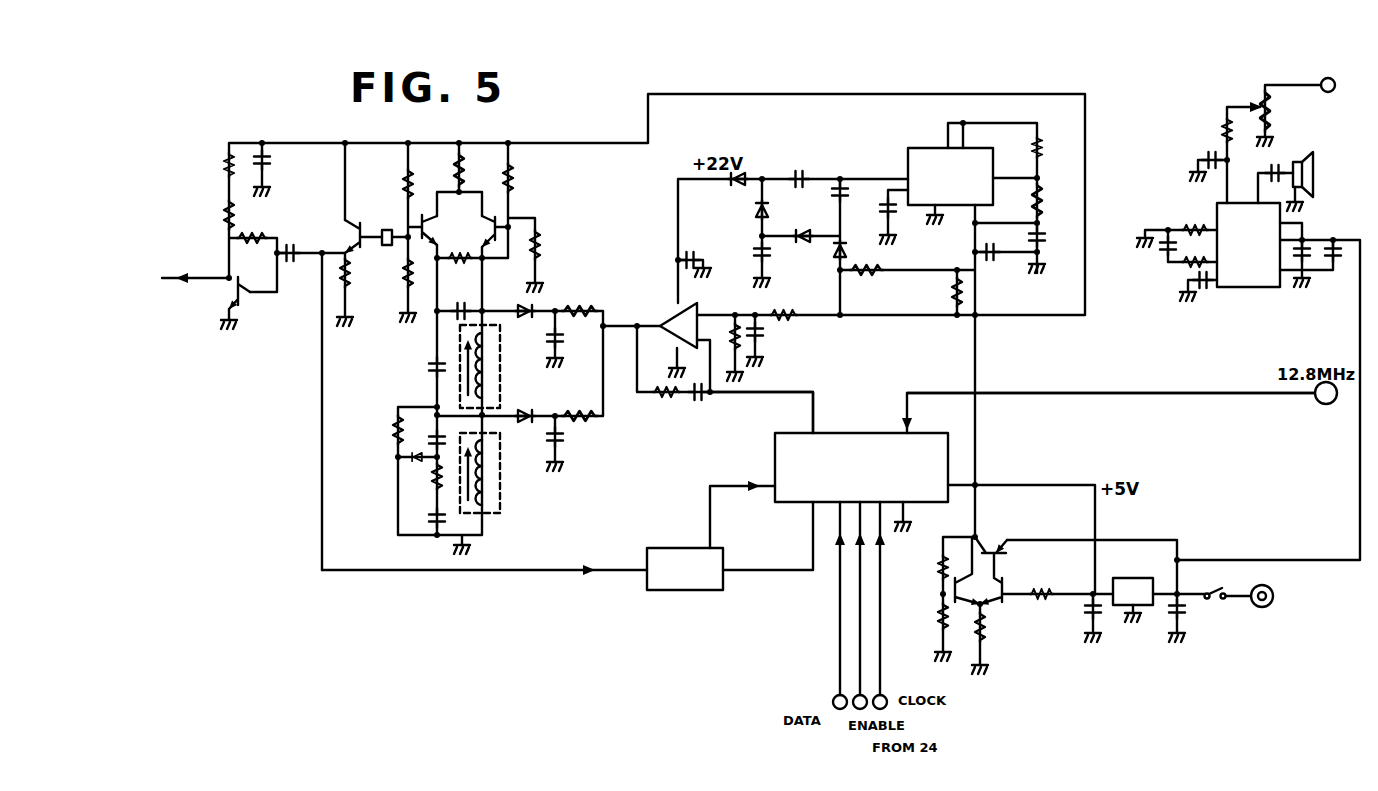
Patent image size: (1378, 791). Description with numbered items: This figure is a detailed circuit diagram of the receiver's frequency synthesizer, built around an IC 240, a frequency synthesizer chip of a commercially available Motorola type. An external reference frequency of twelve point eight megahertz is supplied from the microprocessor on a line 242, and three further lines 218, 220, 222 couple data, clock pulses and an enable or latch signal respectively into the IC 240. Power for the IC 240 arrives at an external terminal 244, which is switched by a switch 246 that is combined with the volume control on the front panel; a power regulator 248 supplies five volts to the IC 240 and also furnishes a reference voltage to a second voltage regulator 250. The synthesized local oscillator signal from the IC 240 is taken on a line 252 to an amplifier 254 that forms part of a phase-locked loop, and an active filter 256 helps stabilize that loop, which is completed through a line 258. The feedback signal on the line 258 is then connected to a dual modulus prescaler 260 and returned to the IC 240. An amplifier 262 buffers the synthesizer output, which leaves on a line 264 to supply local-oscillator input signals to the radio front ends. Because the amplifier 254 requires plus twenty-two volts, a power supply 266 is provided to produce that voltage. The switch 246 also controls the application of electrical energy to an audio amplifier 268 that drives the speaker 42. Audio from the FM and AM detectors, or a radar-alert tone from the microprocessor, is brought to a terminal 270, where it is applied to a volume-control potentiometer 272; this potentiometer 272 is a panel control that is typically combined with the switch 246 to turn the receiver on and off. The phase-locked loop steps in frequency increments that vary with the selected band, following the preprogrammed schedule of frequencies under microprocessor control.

The line 264 is at (228, 276).
The amplifier 262 is at (250, 286).
The active filter 256 is at (504, 419).
The line 258 is at (488, 552).
The amplifier 254 is at (664, 320).
The line 252 is at (758, 392).
The dual modulus prescaler 260 is at (692, 548).
The IC 240 is at (962, 422).
The line 242 is at (992, 393).
The power supply 266 is at (936, 148).
The audio amplifier 268 is at (1215, 215).
The volume-control potentiometer 272 is at (1262, 103).
The terminal 270 is at (1320, 78).
The speaker 42 is at (1315, 152).
The second voltage regulator 250 is at (992, 568).
The power regulator 248 is at (1117, 578).
The switch 246 is at (1215, 603).
The external terminal 244 is at (1275, 592).
The line 218 is at (838, 637).
The line 222 is at (862, 593).
The line 220 is at (880, 630).